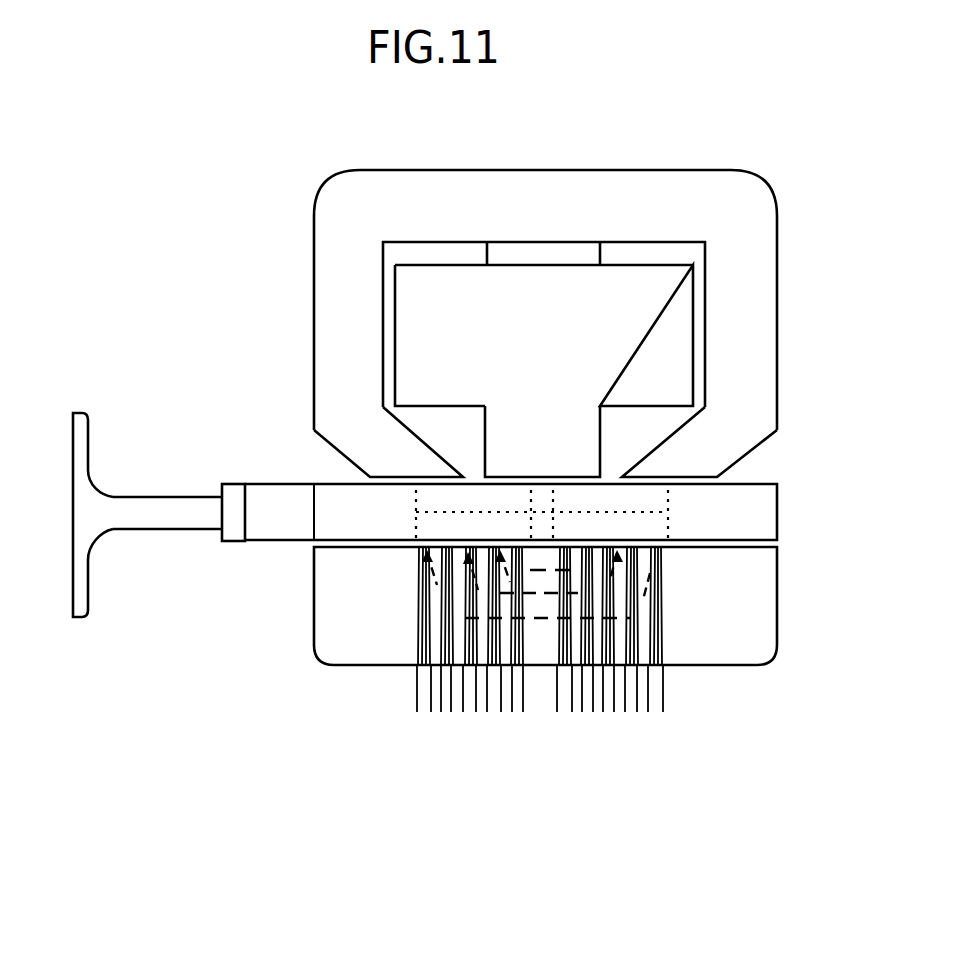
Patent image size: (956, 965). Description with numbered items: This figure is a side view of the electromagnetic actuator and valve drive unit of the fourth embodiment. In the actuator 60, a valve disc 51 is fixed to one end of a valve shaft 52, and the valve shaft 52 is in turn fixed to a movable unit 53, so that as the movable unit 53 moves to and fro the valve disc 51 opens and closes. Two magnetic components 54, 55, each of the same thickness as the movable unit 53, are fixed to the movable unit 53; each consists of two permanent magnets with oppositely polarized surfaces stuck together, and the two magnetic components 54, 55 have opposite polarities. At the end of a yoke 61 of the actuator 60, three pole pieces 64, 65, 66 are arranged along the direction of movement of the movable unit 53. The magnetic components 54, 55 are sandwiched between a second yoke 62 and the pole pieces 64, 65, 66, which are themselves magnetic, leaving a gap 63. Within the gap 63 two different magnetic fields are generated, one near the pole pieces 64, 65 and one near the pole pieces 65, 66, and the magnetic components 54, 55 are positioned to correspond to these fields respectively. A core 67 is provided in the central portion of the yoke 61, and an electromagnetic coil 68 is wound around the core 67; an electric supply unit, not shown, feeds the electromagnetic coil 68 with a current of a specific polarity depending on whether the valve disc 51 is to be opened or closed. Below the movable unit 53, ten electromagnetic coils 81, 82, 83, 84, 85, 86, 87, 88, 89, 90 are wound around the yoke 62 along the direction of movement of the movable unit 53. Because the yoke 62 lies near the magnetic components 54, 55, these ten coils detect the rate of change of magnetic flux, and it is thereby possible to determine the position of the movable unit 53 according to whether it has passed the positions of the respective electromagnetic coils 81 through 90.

The valve disc 51 is at (81, 432).
The valve shaft 52 is at (178, 513).
The movable unit 53 is at (277, 520).
The magnetic component 54 is at (450, 500).
The magnetic component 55 is at (633, 502).
The actuator 60 is at (743, 158).
The yoke 61 is at (660, 183).
The yoke 62 is at (343, 632).
The gap 63 is at (735, 477).
The pole piece 64 is at (397, 470).
The pole piece 65 is at (508, 470).
The pole piece 66 is at (692, 470).
The core 67 is at (547, 255).
The electromagnetic coil 68 is at (428, 336).
The electromagnetic coil 81 is at (424, 629).
The electromagnetic coil 82 is at (447, 629).
The electromagnetic coil 83 is at (470, 629).
The electromagnetic coil 84 is at (494, 629).
The electromagnetic coil 85 is at (517, 629).
The electromagnetic coil 86 is at (564, 629).
The electromagnetic coil 87 is at (587, 629).
The electromagnetic coil 88 is at (608, 629).
The electromagnetic coil 89 is at (631, 629).
The electromagnetic coil 90 is at (655, 629).